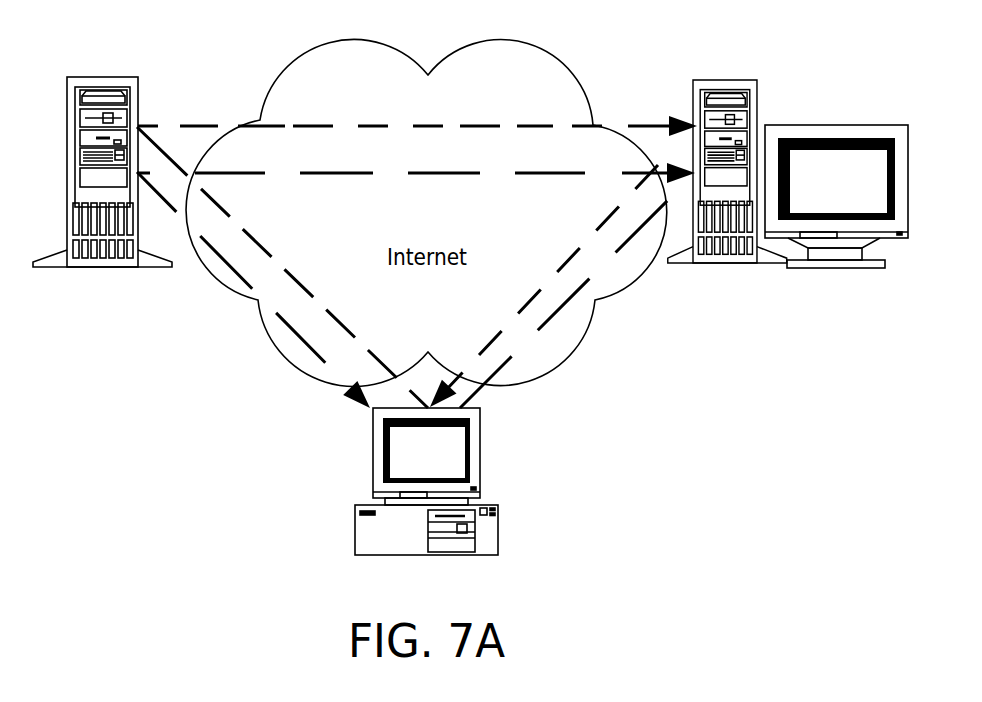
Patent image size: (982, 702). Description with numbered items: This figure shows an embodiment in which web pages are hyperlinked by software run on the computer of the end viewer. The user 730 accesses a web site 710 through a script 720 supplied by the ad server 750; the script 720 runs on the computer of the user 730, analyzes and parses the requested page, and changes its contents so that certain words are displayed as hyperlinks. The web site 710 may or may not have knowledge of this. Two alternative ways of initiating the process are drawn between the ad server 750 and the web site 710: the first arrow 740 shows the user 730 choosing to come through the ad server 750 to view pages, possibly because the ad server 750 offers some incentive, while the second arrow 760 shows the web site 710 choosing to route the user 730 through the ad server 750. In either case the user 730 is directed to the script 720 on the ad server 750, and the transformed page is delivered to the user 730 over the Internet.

The web site 710 is at (788, 188).
The script 720 is at (105, 314).
The user 730 is at (425, 496).
The first arrow 740 is at (417, 116).
The ad server 750 is at (103, 187).
The second arrow 760 is at (416, 184).